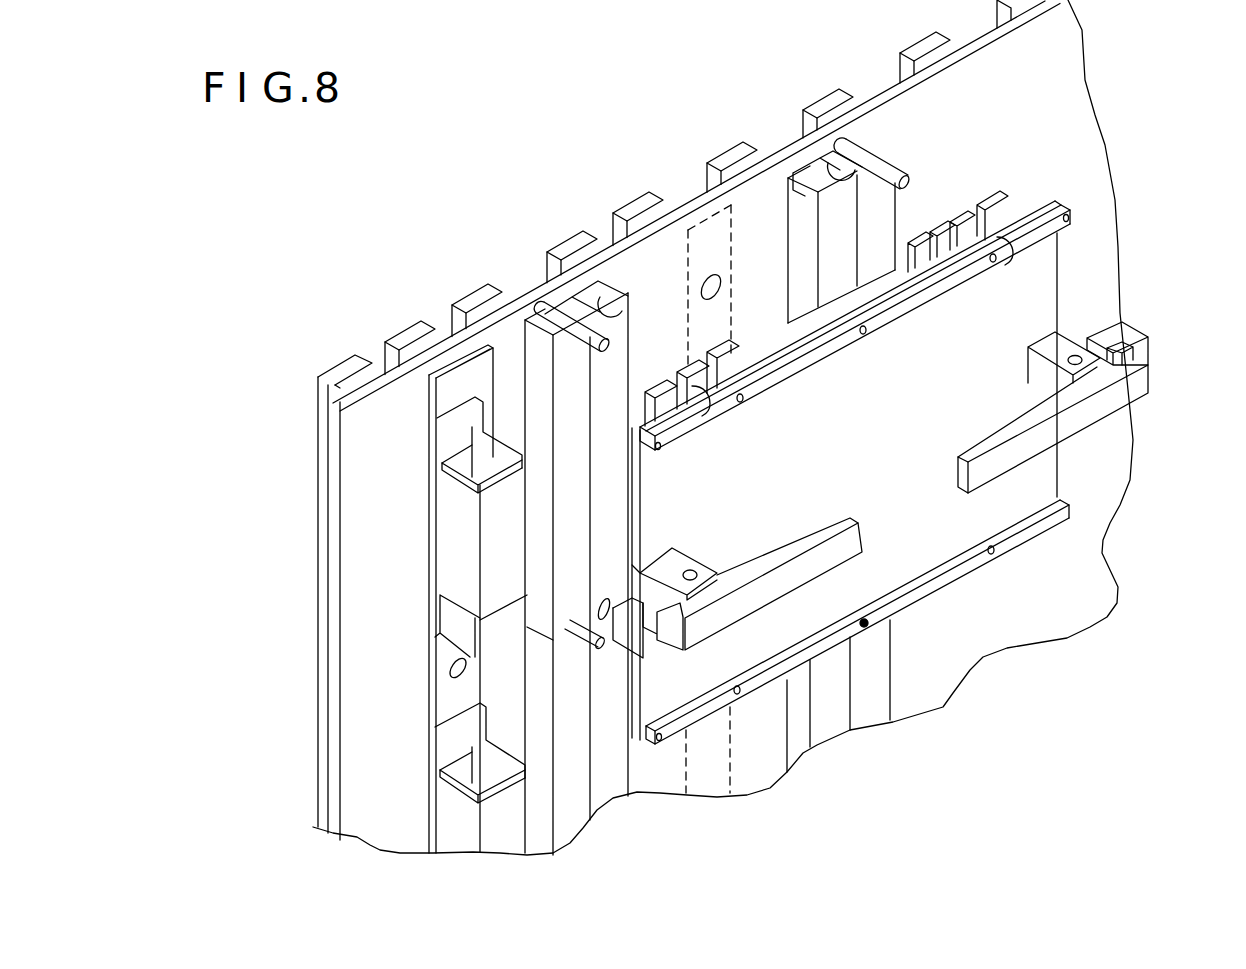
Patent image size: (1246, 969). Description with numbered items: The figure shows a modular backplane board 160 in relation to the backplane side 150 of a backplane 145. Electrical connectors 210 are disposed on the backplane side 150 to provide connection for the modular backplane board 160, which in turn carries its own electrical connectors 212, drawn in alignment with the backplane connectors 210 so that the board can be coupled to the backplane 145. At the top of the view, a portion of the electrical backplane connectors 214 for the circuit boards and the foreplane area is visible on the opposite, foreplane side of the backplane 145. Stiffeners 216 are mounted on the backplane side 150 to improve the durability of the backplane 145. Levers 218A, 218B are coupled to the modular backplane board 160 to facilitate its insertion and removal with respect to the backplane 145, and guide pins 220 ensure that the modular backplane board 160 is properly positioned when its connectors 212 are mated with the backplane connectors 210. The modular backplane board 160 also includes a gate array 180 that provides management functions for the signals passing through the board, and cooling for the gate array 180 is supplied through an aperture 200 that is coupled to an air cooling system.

The backplane 145 is at (322, 521).
The backplane side 150 is at (1083, 158).
The modular backplane board 160 is at (1060, 275).
The gate array 180 is at (823, 314).
The aperture 200 is at (702, 276).
The electrical connectors 210 is at (538, 353).
The electrical connectors 212 is at (697, 400).
The electrical backplane connectors 214 is at (722, 150).
The stiffeners 216 is at (447, 555).
The lever 218A is at (783, 550).
The lever 218B is at (1080, 422).
The guide pins 220 is at (868, 157).